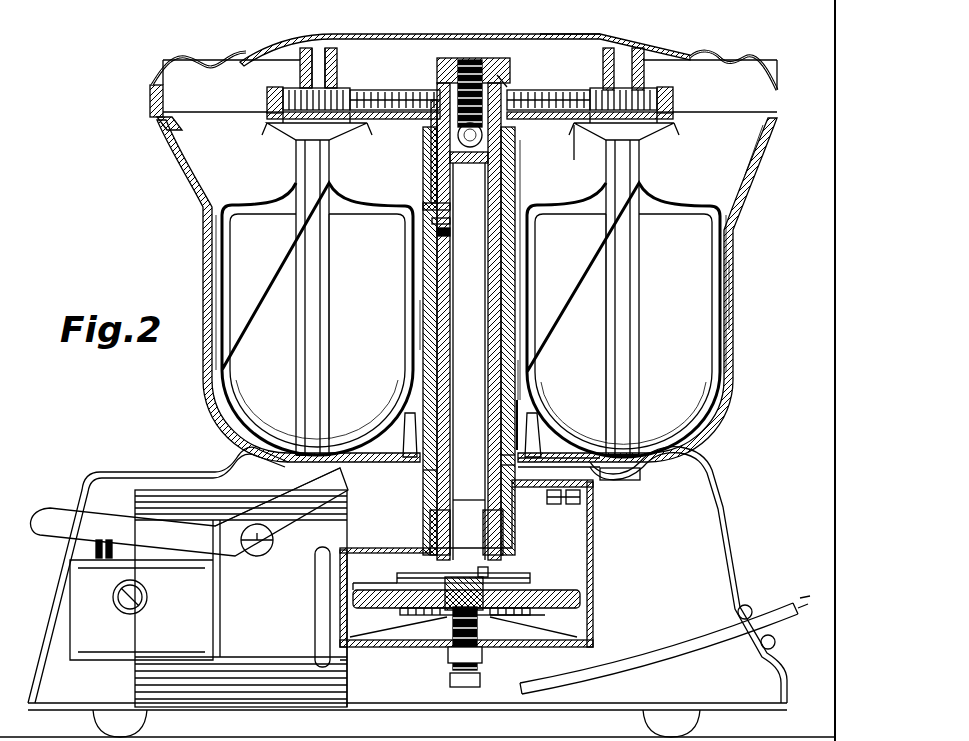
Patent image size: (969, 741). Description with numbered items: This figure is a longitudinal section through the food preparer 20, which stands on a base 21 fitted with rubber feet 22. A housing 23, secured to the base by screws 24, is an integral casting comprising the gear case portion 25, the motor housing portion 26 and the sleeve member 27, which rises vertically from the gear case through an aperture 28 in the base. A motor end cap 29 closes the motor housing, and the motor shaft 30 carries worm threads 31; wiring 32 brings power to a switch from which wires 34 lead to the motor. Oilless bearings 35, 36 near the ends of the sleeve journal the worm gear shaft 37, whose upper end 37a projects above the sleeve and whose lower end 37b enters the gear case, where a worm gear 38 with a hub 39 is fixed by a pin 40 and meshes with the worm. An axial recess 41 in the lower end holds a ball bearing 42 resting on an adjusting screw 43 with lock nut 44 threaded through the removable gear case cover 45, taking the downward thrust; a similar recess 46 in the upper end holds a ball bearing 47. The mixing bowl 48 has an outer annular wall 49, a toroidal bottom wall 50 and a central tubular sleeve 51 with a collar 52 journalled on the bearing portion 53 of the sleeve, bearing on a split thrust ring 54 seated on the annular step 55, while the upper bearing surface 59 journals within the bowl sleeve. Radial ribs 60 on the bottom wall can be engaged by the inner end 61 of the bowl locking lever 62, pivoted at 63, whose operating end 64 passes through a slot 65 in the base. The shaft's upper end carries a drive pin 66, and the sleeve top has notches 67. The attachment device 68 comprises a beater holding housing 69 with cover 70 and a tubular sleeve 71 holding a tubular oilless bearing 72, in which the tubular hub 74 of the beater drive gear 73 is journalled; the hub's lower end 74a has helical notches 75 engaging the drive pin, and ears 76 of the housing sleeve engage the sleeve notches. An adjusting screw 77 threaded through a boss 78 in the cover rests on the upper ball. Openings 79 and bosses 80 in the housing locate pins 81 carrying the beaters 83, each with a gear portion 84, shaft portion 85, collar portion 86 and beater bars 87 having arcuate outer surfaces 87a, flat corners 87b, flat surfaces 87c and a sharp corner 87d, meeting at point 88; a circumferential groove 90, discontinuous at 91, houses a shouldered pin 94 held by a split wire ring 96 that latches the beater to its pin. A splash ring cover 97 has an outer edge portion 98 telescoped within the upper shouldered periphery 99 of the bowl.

The food preparer 20 is at (740, 352).
The base 21 is at (733, 560).
The rubber feet 22 is at (93, 722).
The housing 23 is at (593, 582).
The screws 24 is at (610, 482).
The gear case portion 25 is at (593, 612).
The motor housing portion 26 is at (350, 684).
The sleeve member 27 is at (518, 360).
The aperture 28 is at (540, 502).
The motor end cap 29 is at (140, 688).
The motor shaft 30 is at (397, 575).
The worm threads 31 is at (515, 590).
The wiring 32 is at (775, 610).
The wires 34 is at (112, 538).
The oilless bearing 35 is at (518, 265).
The oilless bearing 36 is at (503, 536).
The worm gear shaft 37 is at (488, 322).
The upper end of worm gear shaft 37a is at (486, 180).
The lower end of worm gear shaft 37b is at (468, 520).
The worm gear 38 is at (530, 595).
The hub 39 is at (488, 571).
The pin 40 is at (445, 575).
The axial recess 41 is at (500, 616).
The ball bearing 42 is at (453, 625).
The adjusting screw 43 is at (480, 682).
The lock nut 44 is at (482, 655).
The gear case cover 45 is at (450, 640).
The axial recess 46 is at (488, 157).
The ball bearing 47 is at (483, 134).
The mixing bowl 48 is at (733, 295).
The outer annular wall 49 is at (733, 225).
The bottom wall 50 is at (660, 470).
The central tubular sleeve 51 is at (420, 326).
The collar 52 is at (530, 410).
The external circumferential bearing portion 53 is at (500, 455).
The split anti-friction thrust ring 54 is at (503, 465).
The annular step 55 is at (496, 470).
The upper bearing surface 59 is at (520, 240).
The radial ribs or ears 60 is at (403, 450).
The inner end of locking lever 61 is at (365, 520).
The bowl locking lever 62 is at (300, 560).
The pivot 63 is at (254, 557).
The outer operating end 64 is at (38, 505).
The slot 65 is at (62, 550).
The drive pin 66 is at (437, 233).
The notches 67 is at (518, 215).
The mixing, beating and whipping attachment device 68 is at (528, 42).
The beater holding housing 69 is at (424, 135).
The cover 70 is at (400, 90).
The tubular sleeve 71 is at (437, 160).
The tubular oilless bearing 72 is at (431, 178).
The beater drive gear 73 is at (430, 88).
The tubular hub 74 is at (423, 145).
The lower end of hub 74a is at (423, 205).
The helical notches 75 is at (432, 220).
The ears 76 is at (466, 246).
The adjusting screw 77 is at (480, 55).
The boss 78 is at (510, 62).
The openings 79 is at (267, 114).
The bosses 80 is at (338, 58).
The pins 81 is at (300, 62).
The beater 83 is at (290, 197).
The gear portion 84 is at (283, 100).
The shaft portion 85 is at (467, 297).
The collar portion 86 is at (268, 138).
The beater bars 87 is at (230, 282).
The outer surfaces 87a is at (329, 300).
The flat corners 87b is at (222, 307).
The flat surfaces 87c is at (232, 356).
The sharp corner 87d is at (230, 254).
The meeting point 88 is at (296, 440).
The circumferential groove 90 is at (470, 140).
The discontinuity of groove 91 is at (575, 130).
The shouldered pin 94 is at (322, 122).
The split wire ring 96 is at (286, 122).
The cover or splash ring 97 is at (172, 62).
The outer annular edge portion 98 is at (165, 100).
The upper shouldered periphery 99 is at (160, 118).